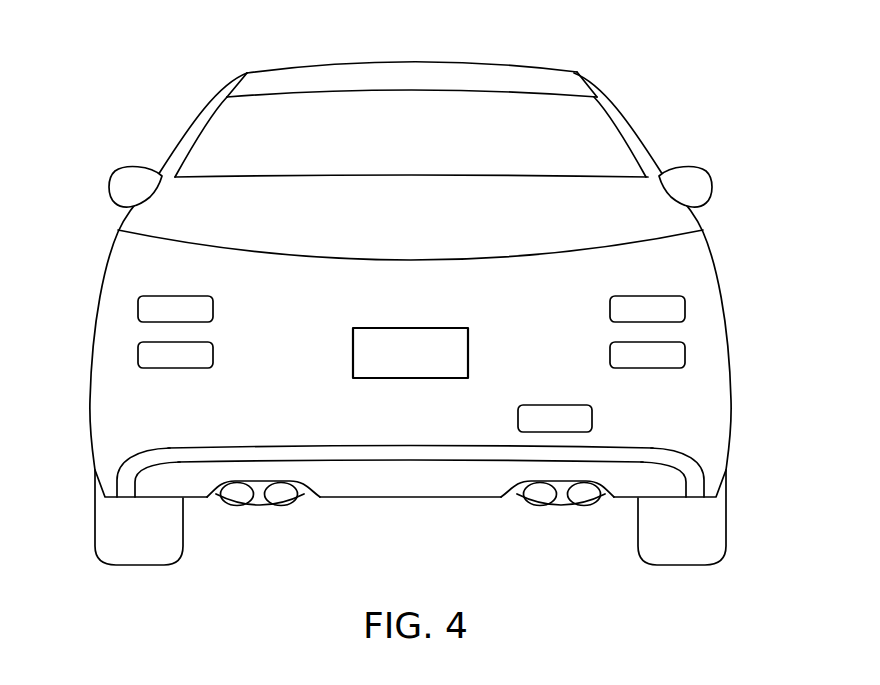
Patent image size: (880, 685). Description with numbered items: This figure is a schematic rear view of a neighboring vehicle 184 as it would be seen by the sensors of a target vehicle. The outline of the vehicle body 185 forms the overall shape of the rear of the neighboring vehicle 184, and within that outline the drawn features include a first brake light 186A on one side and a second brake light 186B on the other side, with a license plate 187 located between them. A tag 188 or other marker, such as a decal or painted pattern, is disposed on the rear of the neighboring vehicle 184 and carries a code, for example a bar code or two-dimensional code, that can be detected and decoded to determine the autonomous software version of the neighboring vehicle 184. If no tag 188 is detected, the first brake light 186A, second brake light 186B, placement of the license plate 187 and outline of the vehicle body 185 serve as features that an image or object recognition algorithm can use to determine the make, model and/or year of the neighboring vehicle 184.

The neighboring vehicle 184 is at (682, 138).
The vehicle body 185 is at (110, 247).
The first brake light 186A is at (126, 327).
The second brake light 186B is at (696, 327).
The license plate 187 is at (469, 353).
The tag 188 is at (597, 417).